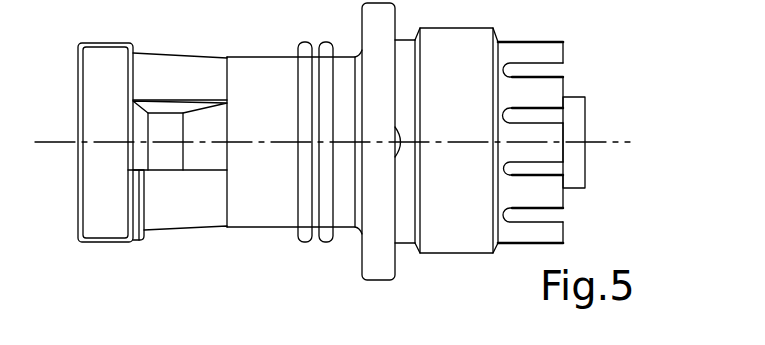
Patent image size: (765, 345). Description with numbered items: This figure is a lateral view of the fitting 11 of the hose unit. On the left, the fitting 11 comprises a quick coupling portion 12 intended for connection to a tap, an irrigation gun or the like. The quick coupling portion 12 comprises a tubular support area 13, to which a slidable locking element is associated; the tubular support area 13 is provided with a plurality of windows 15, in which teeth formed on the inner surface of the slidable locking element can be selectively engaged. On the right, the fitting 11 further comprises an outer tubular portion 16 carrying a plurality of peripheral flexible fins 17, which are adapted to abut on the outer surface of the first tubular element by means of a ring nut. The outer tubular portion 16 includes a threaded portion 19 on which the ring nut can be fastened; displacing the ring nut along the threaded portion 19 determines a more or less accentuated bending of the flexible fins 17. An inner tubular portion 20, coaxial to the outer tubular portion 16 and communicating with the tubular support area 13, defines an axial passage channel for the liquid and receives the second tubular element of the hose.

The fitting 11 is at (320, 244).
The quick coupling portion 12 is at (200, 236).
The tubular support area 13 is at (133, 233).
The windows 15 is at (168, 113).
The outer tubular portion 16 is at (405, 212).
The flexible fins 17 is at (547, 97).
The threaded portion 19 is at (472, 232).
The inner tubular portion 20 is at (575, 157).